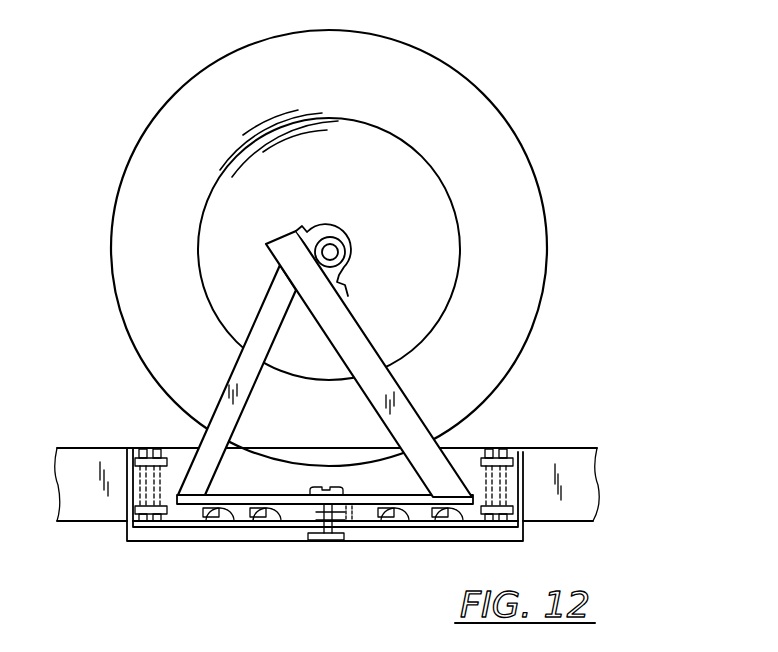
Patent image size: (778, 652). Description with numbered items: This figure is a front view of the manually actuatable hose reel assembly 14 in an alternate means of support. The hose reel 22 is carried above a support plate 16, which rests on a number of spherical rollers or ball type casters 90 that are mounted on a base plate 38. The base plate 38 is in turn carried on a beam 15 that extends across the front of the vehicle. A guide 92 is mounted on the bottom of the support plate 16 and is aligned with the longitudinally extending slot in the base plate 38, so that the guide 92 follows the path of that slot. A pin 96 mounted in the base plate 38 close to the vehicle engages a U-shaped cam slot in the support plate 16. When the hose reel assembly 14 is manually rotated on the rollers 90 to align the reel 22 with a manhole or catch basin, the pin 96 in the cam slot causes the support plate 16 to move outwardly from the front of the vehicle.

The hose reel assembly 14 is at (100, 283).
The support beam 15 is at (577, 450).
The support plate 16 is at (172, 528).
The hose reel 22 is at (502, 122).
The base plate 38 is at (196, 505).
The ball type casters 90 is at (246, 510).
The guide 92 is at (306, 518).
The pin 96 is at (349, 514).